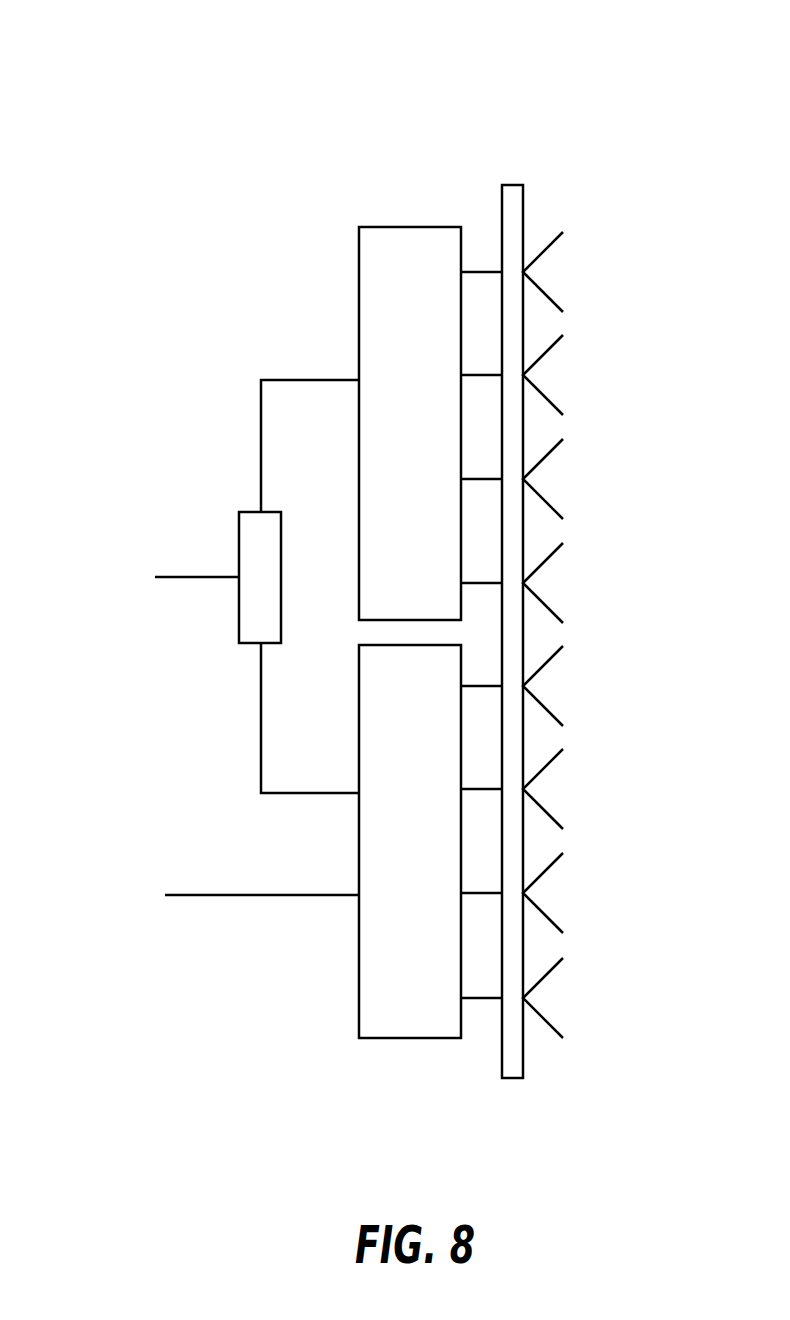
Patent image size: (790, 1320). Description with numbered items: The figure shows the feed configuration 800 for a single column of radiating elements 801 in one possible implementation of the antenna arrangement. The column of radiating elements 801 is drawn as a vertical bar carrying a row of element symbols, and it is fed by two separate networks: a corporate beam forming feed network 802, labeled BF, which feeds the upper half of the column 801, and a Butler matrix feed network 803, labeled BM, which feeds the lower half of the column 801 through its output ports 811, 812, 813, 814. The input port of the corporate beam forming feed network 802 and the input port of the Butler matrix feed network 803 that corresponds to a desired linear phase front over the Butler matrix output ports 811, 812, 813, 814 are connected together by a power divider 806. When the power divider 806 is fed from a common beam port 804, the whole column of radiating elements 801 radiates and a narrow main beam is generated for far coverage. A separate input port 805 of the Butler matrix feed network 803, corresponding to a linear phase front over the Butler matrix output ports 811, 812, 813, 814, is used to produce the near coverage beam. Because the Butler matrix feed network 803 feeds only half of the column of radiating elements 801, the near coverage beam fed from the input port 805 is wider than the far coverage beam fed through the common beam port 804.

The antenna system 800 is at (203, 62).
The column of radiating elements 801 is at (560, 188).
The corporate beam forming feed network 802 is at (359, 248).
The Butler matrix feed network 803 is at (359, 980).
The common beam port 804 is at (185, 577).
The input port 805 is at (197, 895).
The power divider 806 is at (239, 622).
The Butler matrix output port 811 is at (484, 684).
The Butler matrix output port 812 is at (484, 788).
The Butler matrix output port 813 is at (484, 893).
The Butler matrix output port 814 is at (484, 998).